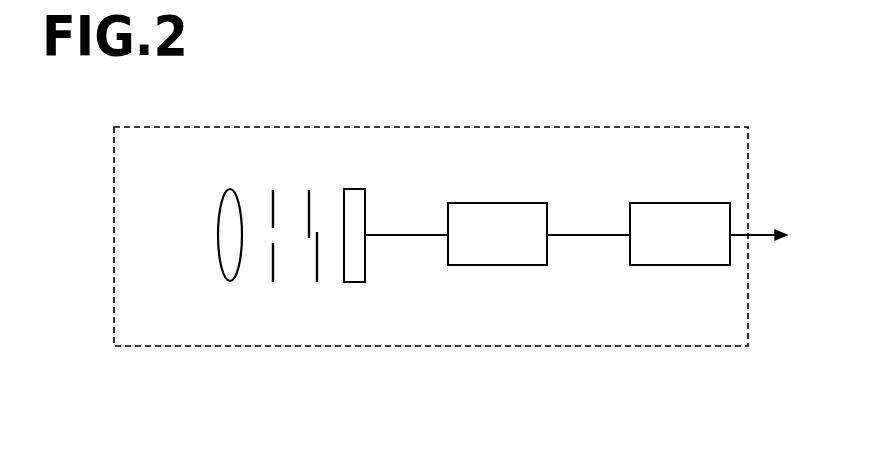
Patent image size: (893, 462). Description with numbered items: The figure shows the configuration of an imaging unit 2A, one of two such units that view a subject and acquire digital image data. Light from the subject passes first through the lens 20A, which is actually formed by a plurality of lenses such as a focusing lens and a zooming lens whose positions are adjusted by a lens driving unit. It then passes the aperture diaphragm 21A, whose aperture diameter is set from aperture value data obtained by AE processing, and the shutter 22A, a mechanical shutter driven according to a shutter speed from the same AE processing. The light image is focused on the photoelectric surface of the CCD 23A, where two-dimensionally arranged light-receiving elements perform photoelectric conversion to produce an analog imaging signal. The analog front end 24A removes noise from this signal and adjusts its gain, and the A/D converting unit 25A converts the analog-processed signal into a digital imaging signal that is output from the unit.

The imaging unit 2A is at (683, 125).
The lens 20A is at (230, 188).
The aperture diaphragm 21A is at (273, 283).
The shutter 22A is at (309, 190).
The CCD 23A is at (355, 283).
The analog front end (AFE) 24A is at (487, 267).
The A/D converting unit 25A is at (668, 267).